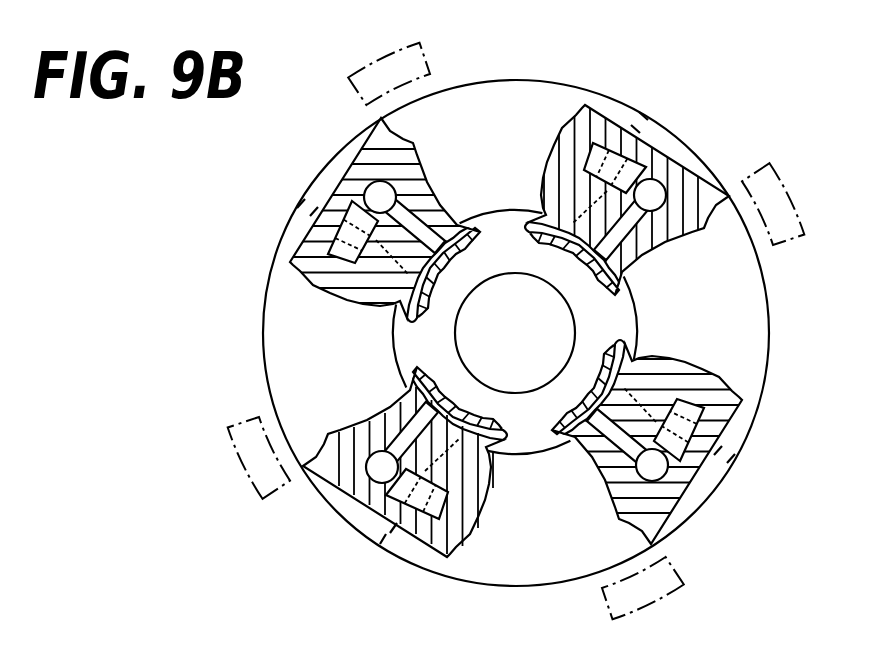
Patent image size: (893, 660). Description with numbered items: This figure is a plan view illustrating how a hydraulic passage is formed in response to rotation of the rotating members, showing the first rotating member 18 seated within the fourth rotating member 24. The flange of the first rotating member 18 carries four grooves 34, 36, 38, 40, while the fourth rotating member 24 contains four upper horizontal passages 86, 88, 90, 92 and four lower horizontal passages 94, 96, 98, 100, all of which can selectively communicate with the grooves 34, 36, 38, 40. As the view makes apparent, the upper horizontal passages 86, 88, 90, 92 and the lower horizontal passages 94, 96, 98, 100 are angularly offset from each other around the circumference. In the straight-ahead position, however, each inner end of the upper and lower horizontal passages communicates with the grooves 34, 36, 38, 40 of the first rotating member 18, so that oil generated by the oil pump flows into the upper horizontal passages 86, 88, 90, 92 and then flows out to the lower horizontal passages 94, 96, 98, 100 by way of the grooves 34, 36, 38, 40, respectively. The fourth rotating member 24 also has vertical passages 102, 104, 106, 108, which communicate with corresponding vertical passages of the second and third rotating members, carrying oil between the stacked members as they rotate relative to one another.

The first rotating member 18 is at (603, 322).
The fourth rotating member 24 is at (261, 302).
The groove 34 is at (402, 281).
The groove 36 is at (483, 438).
The groove 38 is at (630, 361).
The groove 40 is at (539, 214).
The upper horizontal passage 86 is at (362, 490).
The upper horizontal passage 88 is at (670, 483).
The upper horizontal passage 90 is at (652, 188).
The upper horizontal passage 92 is at (357, 186).
The lower horizontal passage 94 is at (402, 530).
The lower horizontal passage 96 is at (733, 457).
The lower horizontal passage 98 is at (630, 116).
The lower horizontal passage 100 is at (300, 205).
The vertical passage 102 is at (372, 473).
The vertical passage 104 is at (650, 469).
The vertical passage 106 is at (657, 190).
The vertical passage 108 is at (357, 161).